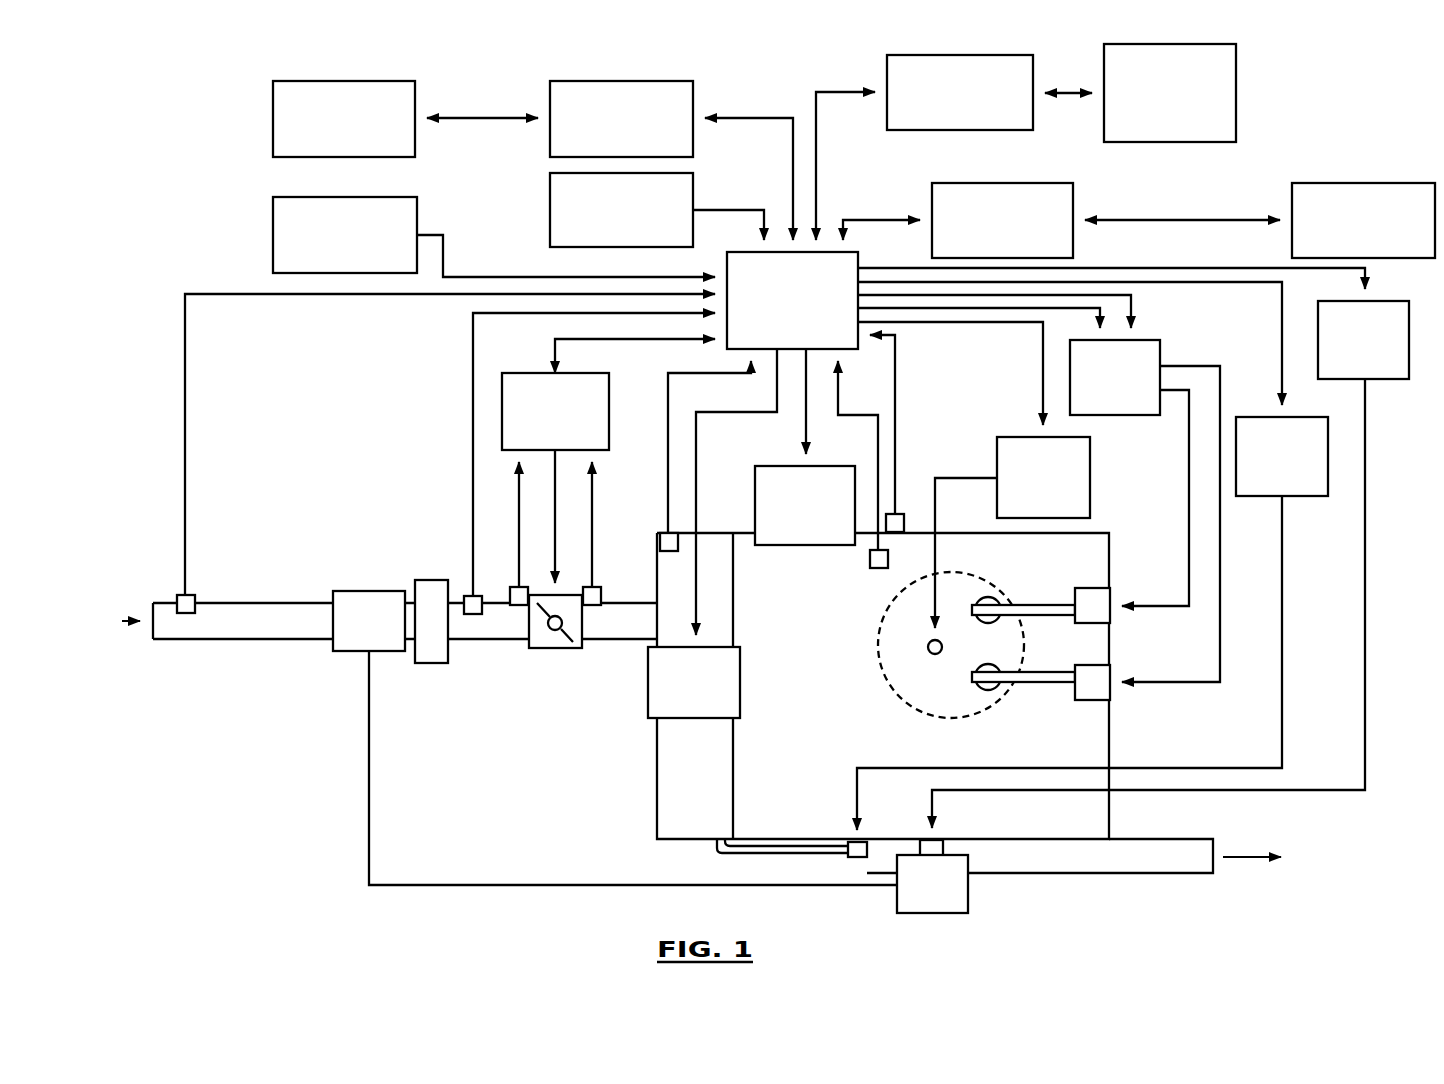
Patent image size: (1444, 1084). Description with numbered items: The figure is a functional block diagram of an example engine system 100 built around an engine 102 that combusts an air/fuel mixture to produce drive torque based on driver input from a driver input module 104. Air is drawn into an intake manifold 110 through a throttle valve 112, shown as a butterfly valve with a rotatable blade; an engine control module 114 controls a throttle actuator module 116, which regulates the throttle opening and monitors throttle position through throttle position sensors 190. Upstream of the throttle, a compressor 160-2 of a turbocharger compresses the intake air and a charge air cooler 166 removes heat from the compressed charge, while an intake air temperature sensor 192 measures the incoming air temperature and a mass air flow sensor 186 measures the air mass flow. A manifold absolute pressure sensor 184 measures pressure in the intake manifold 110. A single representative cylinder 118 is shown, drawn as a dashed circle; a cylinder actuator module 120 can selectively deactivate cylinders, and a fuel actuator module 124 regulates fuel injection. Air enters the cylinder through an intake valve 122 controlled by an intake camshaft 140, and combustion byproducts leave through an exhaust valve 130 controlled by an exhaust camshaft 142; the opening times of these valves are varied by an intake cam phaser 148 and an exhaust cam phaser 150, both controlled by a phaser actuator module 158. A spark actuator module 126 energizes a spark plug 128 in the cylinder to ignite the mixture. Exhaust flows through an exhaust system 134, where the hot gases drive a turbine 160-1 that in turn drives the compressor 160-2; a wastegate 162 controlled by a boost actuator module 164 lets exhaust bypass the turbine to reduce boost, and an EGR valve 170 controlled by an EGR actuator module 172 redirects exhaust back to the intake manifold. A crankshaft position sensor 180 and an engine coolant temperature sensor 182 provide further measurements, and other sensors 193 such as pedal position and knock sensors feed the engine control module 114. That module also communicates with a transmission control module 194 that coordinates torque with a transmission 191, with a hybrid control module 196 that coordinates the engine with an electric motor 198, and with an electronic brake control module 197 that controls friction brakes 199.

The engine system 100 is at (160, 94).
The engine 102 is at (1110, 545).
The driver input module 104 is at (550, 210).
The intake manifold 110 is at (657, 768).
The throttle valve 112 is at (558, 648).
The engine control module 114 is at (858, 258).
The throttle actuator module 116 is at (530, 373).
The cylinder 118 is at (895, 703).
The cylinder actuator module 120 is at (805, 466).
The intake valve 122 is at (988, 597).
The fuel actuator module 124 is at (718, 718).
The spark actuator module 126 is at (1090, 478).
The spark plug 128 is at (928, 649).
The exhaust valve 130 is at (988, 690).
The exhaust system 134 is at (1185, 878).
The intake camshaft 140 is at (1043, 605).
The exhaust camshaft 142 is at (1048, 683).
The intake cam phaser 148 is at (1092, 588).
The exhaust cam phaser 150 is at (1092, 700).
The phaser actuator module 158 is at (1160, 360).
The turbine 160-1 is at (968, 893).
The compressor 160-2 is at (355, 651).
The wastegate 162 is at (940, 840).
The boost actuator module 164 is at (1385, 379).
The charge air cooler 166 is at (433, 663).
The EGR valve 170 is at (857, 857).
The EGR actuator module 172 is at (1305, 496).
The crankshaft position sensor 180 is at (905, 514).
The engine coolant temperature sensor 182 is at (870, 568).
The manifold absolute pressure sensor 184 is at (660, 535).
The mass air flow sensor 186 is at (473, 596).
The throttle position sensors 190 is at (590, 604).
The transmission 191 is at (273, 118).
The intake air temperature sensor 192 is at (183, 595).
The other sensors 193 is at (273, 235).
The transmission control module 194 is at (550, 97).
The hybrid control module 196 is at (960, 130).
The electronic brake control module 197 is at (1073, 205).
The electric motor 198 is at (1172, 142).
The friction brakes 199 is at (1370, 183).